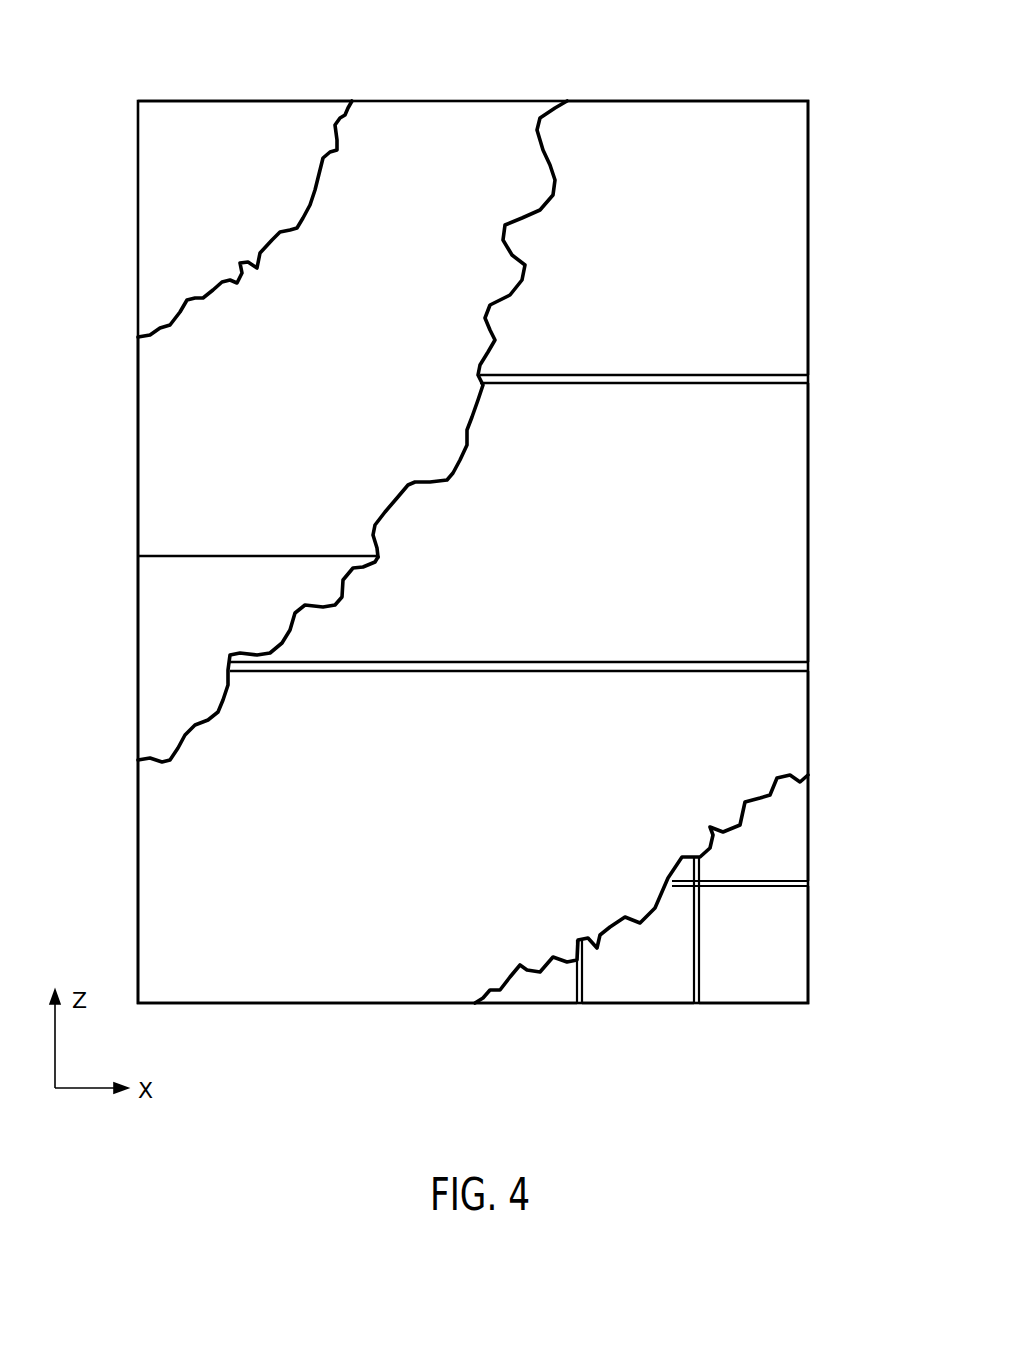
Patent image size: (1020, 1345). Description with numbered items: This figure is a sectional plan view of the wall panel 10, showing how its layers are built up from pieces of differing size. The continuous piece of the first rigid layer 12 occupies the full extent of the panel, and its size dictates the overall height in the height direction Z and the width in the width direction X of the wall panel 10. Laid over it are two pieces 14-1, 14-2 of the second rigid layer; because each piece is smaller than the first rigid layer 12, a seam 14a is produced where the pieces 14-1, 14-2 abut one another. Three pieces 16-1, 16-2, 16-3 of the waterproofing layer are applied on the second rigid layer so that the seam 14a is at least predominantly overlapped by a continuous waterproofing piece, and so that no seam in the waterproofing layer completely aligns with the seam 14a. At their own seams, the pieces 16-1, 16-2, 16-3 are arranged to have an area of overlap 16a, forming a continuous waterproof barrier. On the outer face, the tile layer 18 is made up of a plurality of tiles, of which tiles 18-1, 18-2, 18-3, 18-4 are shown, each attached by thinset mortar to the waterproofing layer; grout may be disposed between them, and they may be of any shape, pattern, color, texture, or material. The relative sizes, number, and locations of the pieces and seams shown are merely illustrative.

The wall panel 10 is at (731, 51).
The first rigid layer 12 is at (248, 122).
The piece of second rigid layer 14-1 is at (163, 439).
The piece of second rigid layer 14-2 is at (157, 607).
The seam 14a is at (228, 555).
The piece of waterproofing layer 16-1 is at (788, 177).
The piece of waterproofing layer 16-2 is at (785, 490).
The piece of waterproofing layer 16-3 is at (782, 742).
The area of overlap 16a is at (767, 372).
The tile layer 18 is at (774, 932).
The tile 18-1 is at (795, 973).
The tile 18-2 is at (795, 840).
The tile 18-3 is at (636, 987).
The tile 18-4 is at (542, 988).